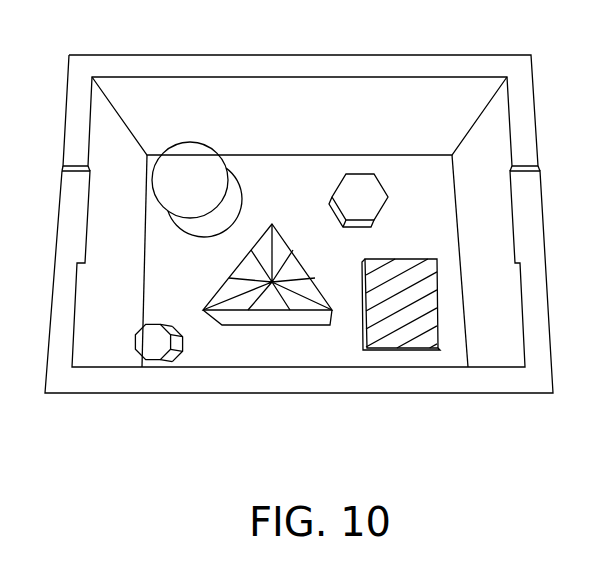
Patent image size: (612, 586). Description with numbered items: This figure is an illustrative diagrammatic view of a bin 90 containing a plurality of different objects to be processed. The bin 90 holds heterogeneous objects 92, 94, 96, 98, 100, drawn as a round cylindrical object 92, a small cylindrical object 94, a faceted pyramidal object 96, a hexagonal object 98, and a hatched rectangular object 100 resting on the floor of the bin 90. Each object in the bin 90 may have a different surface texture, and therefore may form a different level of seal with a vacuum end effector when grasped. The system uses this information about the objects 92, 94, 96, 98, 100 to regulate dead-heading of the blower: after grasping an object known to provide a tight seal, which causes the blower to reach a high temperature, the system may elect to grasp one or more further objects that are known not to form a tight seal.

The bin 90 is at (317, 55).
The object 92 is at (176, 192).
The object 94 is at (152, 352).
The object 96 is at (270, 300).
The object 98 is at (348, 208).
The object 100 is at (408, 333).